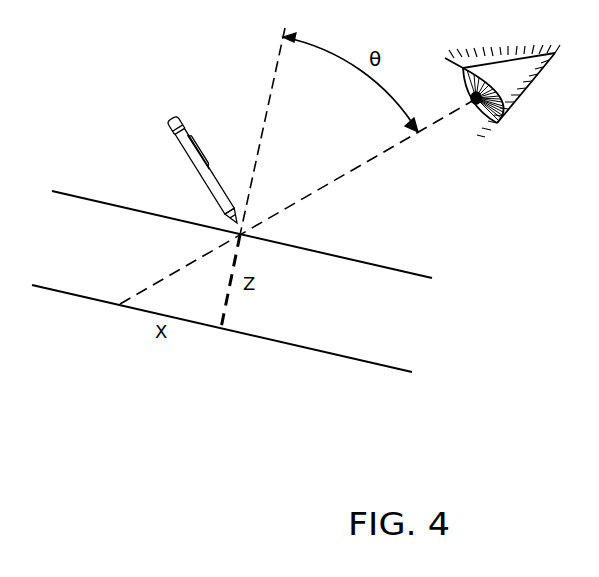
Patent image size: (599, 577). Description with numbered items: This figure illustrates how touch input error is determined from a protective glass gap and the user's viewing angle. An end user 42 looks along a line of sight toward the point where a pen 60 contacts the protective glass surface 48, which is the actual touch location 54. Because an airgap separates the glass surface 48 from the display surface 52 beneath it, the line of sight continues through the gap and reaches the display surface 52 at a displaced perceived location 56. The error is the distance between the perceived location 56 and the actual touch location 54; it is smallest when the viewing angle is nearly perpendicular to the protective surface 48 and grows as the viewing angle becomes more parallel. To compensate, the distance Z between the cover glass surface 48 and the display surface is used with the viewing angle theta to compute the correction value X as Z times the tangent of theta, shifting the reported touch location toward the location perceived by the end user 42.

The end user 42 is at (477, 123).
The protective glass surface 48 is at (73, 193).
The display surface 52 is at (120, 305).
The actual touch location 54 is at (390, 368).
The perceived location 56 is at (222, 330).
The pen 60 is at (184, 130).